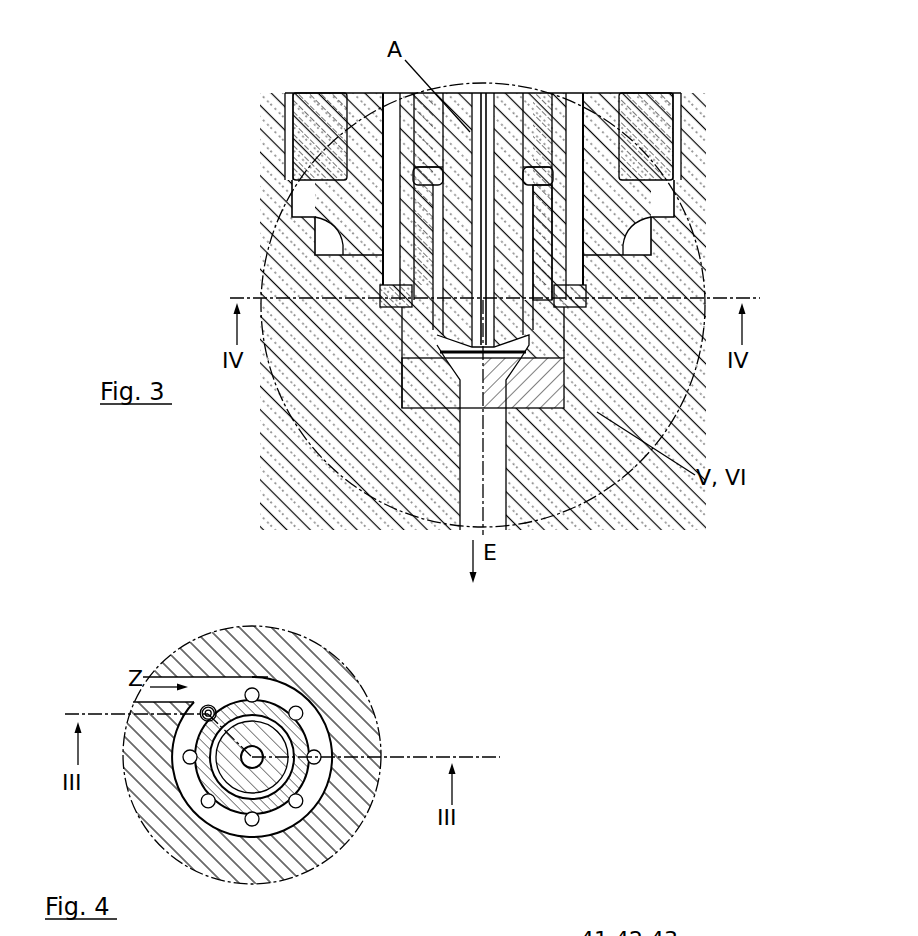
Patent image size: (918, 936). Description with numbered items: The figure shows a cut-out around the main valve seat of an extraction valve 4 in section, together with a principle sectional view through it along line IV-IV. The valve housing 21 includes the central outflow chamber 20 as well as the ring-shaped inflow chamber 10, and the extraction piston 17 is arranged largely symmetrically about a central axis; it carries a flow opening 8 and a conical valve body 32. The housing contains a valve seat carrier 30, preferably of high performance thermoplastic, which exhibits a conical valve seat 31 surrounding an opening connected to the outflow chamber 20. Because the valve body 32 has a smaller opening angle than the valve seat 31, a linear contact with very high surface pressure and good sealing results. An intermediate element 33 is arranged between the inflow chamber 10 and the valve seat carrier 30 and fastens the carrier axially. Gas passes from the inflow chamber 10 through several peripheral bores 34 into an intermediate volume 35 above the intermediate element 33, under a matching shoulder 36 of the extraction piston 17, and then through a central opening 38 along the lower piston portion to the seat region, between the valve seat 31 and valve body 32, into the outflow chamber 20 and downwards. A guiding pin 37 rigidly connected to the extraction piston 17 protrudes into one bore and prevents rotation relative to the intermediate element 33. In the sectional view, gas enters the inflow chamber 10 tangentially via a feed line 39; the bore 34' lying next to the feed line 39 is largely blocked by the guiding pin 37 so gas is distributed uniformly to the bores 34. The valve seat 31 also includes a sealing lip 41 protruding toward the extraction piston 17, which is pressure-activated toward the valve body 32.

In FIG. 3, the extraction valve 4 is at (400, 93).
In FIG. 3, the flow opening 8 is at (491, 132).
In FIG. 4, the flow opening 8 is at (248, 752).
In FIG. 3, the inflow chamber 10 is at (400, 248).
In FIG. 4, the inflow chamber 10 is at (313, 722).
In FIG. 3, the extraction piston 17 is at (560, 113).
In FIG. 4, the extraction piston 17 is at (273, 807).
In FIG. 3, the outflow chamber 20 is at (500, 455).
In FIG. 3, the valve housing 21 is at (683, 272).
In FIG. 4, the valve housing 21 is at (367, 728).
In FIG. 3, the valve seat carrier 30 is at (568, 382).
In FIG. 3, the valve seat 31 is at (400, 396).
In FIG. 3, the valve body 32 is at (408, 366).
In FIG. 3, the intermediate element 33 is at (560, 215).
In FIG. 4, the intermediate element 33 is at (174, 786).
In FIG. 3, the bores 34 is at (523, 192).
In FIG. 4, the bores 34 is at (275, 763).
In FIG. 4, the bore 34' is at (134, 686).
In FIG. 3, the intermediate volume 35 is at (418, 170).
In FIG. 3, the flange 36 is at (565, 168).
In FIG. 3, the guiding pin 37 is at (338, 128).
In FIG. 4, the guiding pin 37 is at (205, 707).
In FIG. 3, the central opening 38 is at (688, 118).
In FIG. 4, the central opening 38 is at (300, 772).
In FIG. 4, the feed line 39 is at (158, 675).
In FIG. 3, the sealing lip 41 is at (396, 300).